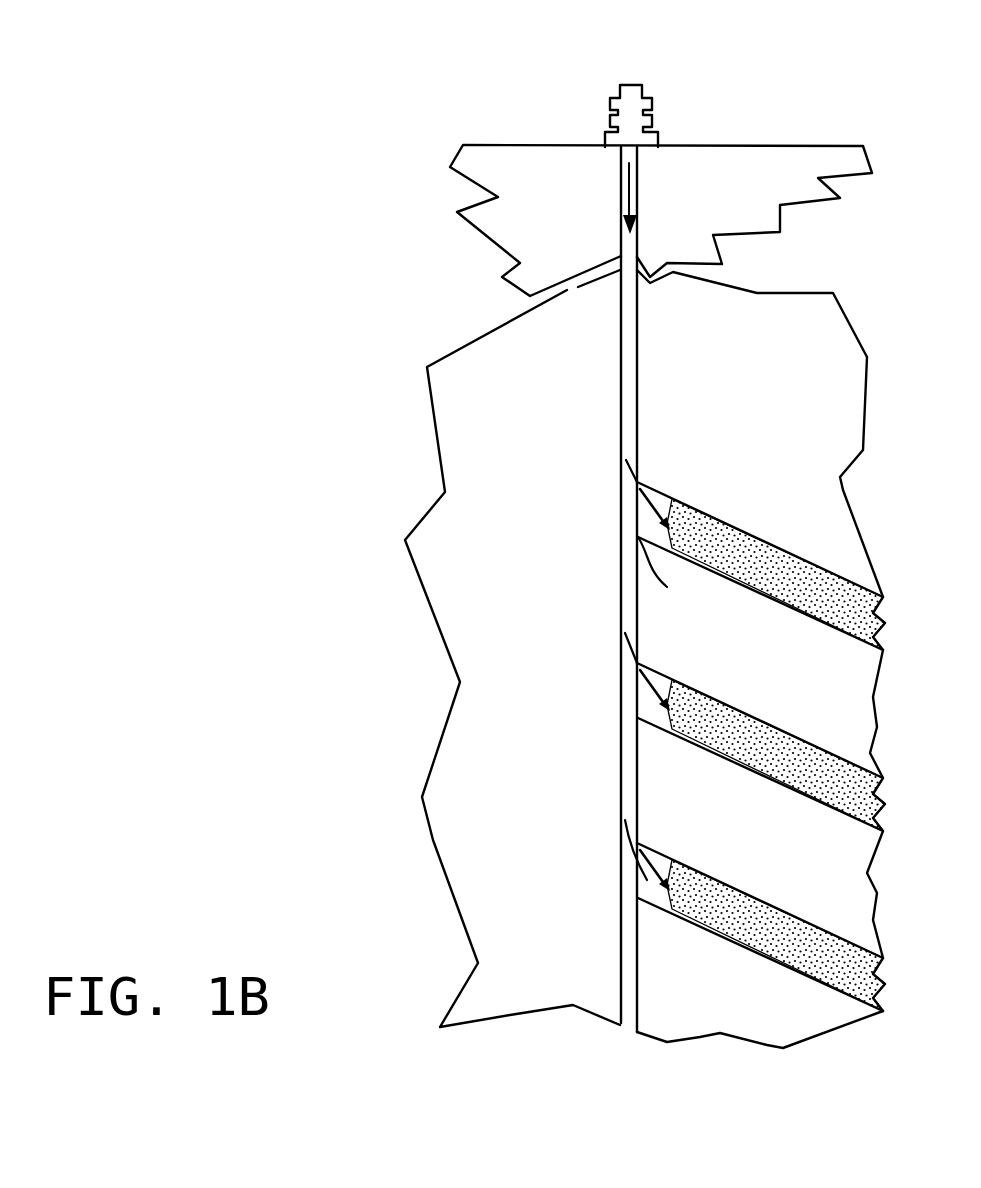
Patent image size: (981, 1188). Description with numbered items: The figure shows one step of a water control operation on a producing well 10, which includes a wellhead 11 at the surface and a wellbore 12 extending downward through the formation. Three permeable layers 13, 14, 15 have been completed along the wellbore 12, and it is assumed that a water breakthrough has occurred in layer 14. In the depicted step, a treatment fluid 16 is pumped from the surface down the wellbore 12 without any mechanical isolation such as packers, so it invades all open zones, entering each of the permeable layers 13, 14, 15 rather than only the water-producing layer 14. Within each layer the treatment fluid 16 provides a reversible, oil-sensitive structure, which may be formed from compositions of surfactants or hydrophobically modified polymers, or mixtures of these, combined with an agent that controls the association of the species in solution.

The producing well 10 is at (580, 613).
The wellhead 11 is at (637, 86).
The wellbore 12 is at (640, 318).
The permeable layer 13 is at (710, 513).
The permeable layer 14 is at (713, 695).
The permeable layer 15 is at (715, 878).
The treatment fluid 16 is at (664, 663).